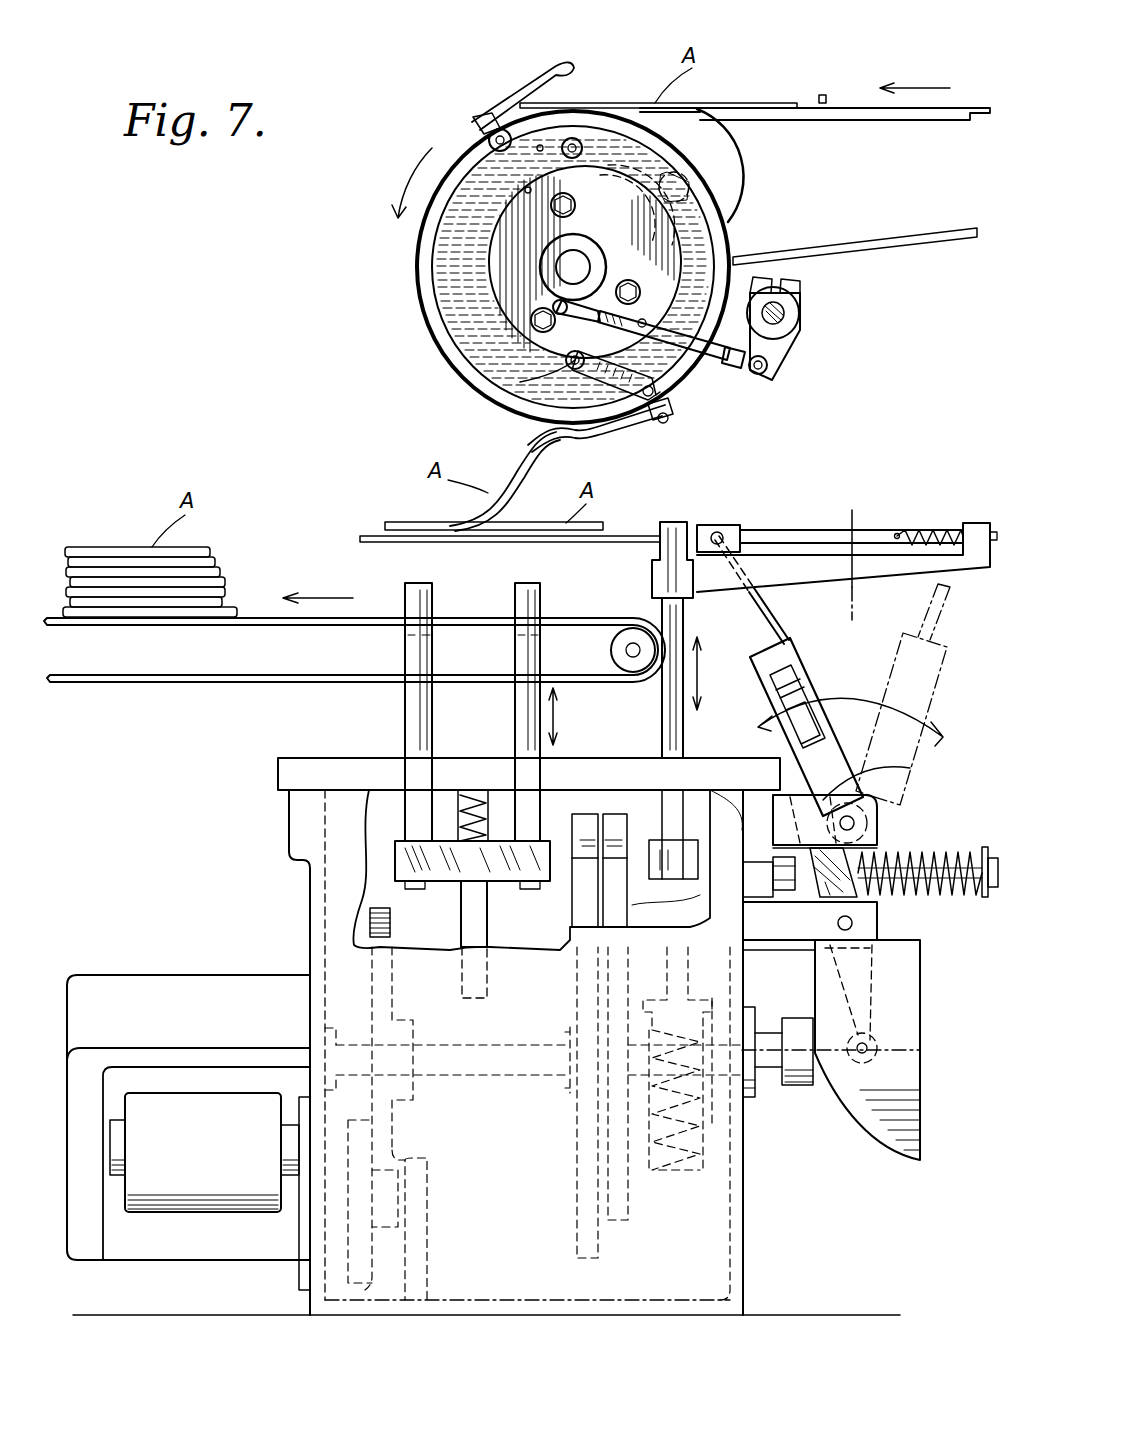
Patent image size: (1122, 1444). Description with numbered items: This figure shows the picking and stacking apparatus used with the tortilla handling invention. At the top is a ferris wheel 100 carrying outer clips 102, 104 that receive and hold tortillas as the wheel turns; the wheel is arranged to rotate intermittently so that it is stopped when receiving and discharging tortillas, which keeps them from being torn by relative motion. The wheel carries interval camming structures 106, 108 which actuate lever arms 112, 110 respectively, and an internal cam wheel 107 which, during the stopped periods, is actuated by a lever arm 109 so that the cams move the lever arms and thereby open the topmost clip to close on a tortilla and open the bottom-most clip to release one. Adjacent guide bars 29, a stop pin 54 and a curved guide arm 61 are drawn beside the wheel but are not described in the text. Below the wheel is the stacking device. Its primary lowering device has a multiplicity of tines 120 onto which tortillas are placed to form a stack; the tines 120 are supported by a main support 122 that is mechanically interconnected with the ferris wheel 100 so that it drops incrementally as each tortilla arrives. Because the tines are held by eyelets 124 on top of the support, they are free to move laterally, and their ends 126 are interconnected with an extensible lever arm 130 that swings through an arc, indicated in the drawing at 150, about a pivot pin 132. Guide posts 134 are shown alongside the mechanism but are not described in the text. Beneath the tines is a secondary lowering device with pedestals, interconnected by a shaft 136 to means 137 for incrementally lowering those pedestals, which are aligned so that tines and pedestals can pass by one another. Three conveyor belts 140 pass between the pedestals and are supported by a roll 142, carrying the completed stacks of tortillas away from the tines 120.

The guide bar 29 is at (895, 120).
The stop pin 54 is at (822, 95).
The curved guide arm 61 is at (733, 206).
The ferris wheel 100 is at (468, 293).
The outer clip 102 is at (523, 90).
The outer clip 104 is at (614, 446).
The interval camming structure 106 is at (574, 262).
The internal cam wheel 107 is at (500, 245).
The interval camming structure 108 is at (575, 365).
The lever arm 109 is at (715, 362).
The lever arm 110 is at (592, 360).
The lever arm 112 is at (470, 160).
The tines 120 is at (405, 541).
The main support 122 is at (662, 736).
The eyelets 124 is at (680, 522).
The ends of the tines 126 is at (748, 526).
The extensible lever arm 130 is at (760, 617).
The pivot pin 132 is at (860, 826).
The guide posts 134 is at (515, 655).
The shaft 136 is at (487, 910).
The means for incrementally lowering the pedestals 137 is at (160, 1215).
The conveyor belts 140 is at (563, 618).
The roll 142 is at (632, 655).
The arc of lever motion 150 is at (888, 770).